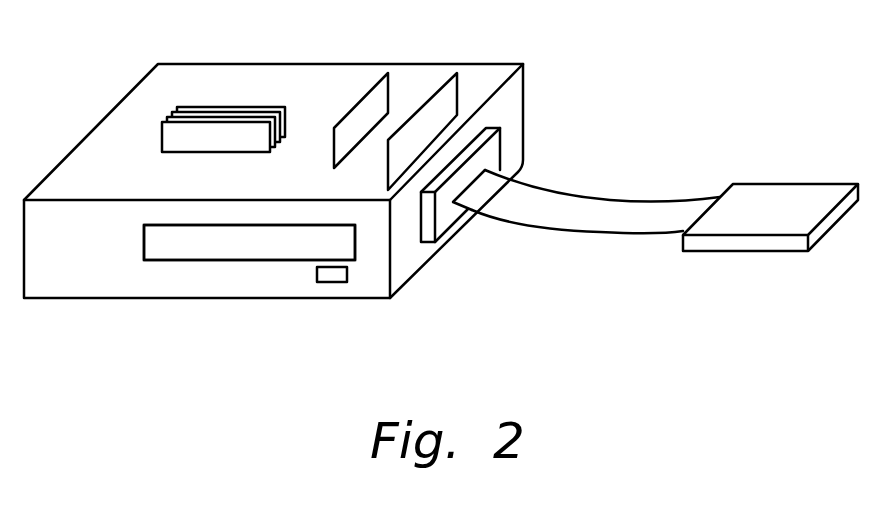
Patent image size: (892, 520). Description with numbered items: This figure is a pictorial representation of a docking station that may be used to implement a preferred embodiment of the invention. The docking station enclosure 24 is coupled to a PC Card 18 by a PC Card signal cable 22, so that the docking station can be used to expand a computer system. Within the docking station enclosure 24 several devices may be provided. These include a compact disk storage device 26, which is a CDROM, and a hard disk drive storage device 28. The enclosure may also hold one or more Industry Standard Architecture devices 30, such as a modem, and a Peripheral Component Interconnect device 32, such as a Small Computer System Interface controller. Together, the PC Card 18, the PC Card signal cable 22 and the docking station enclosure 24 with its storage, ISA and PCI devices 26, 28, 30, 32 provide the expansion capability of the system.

The PC Card 18 is at (782, 198).
The PC Card signal cable 22 is at (603, 220).
The docking station enclosure 24 is at (492, 64).
The compact disk storage device 26 is at (243, 249).
The hard disk drive storage device 28 is at (201, 106).
The Industry Standard Architecture (ISA) device 30 is at (439, 87).
The Peripheral Component Interconnect (PCI) device 32 is at (373, 87).